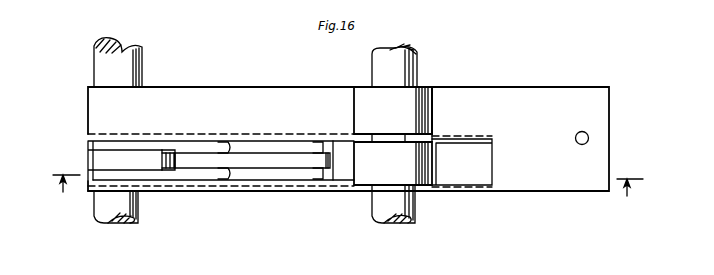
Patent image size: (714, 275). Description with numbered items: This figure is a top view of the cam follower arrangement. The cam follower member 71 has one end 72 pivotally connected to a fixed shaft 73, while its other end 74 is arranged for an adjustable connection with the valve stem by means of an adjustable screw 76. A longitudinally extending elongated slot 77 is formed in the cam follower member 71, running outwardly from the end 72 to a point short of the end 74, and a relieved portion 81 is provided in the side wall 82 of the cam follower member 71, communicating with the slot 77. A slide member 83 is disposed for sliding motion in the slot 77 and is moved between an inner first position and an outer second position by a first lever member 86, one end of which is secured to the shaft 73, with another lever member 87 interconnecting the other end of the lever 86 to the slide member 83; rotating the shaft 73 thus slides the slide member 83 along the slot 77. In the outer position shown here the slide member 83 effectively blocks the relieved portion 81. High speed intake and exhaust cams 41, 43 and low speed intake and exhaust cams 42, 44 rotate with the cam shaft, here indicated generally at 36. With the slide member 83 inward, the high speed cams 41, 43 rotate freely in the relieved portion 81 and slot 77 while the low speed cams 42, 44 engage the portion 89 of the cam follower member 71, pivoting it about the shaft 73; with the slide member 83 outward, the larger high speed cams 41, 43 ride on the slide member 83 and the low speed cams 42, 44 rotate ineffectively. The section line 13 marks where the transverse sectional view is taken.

The section line 13 is at (348, 195).
The post 36 is at (405, 48).
The high speed intake cam 41 is at (393, 199).
The high speed exhaust cam 43 is at (393, 172).
The low speed intake cam 42 is at (379, 99).
The low speed exhaust cam 44 is at (362, 98).
The cam follower member 71 is at (568, 88).
The end 72 is at (88, 112).
The fixed shaft 73 is at (118, 42).
The end 74 is at (609, 100).
The adjustable screw 76 is at (589, 138).
The elongated slot 77 is at (473, 137).
The relieved portion 81 is at (358, 190).
The side wall 82 is at (288, 190).
The slide member 83 is at (438, 168).
The first lever member 86 is at (173, 141).
The lever member 87 is at (263, 153).
The portion 89 is at (435, 108).